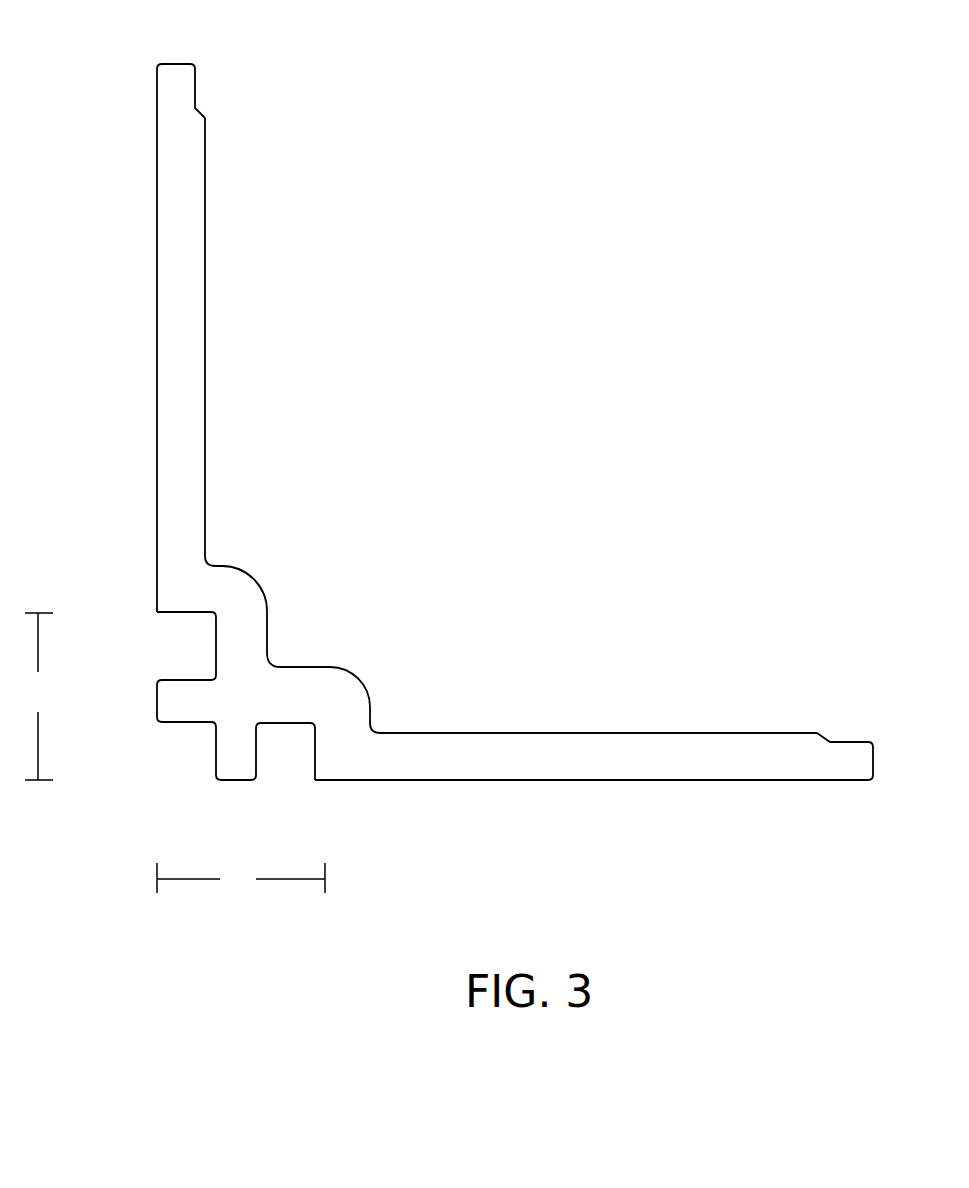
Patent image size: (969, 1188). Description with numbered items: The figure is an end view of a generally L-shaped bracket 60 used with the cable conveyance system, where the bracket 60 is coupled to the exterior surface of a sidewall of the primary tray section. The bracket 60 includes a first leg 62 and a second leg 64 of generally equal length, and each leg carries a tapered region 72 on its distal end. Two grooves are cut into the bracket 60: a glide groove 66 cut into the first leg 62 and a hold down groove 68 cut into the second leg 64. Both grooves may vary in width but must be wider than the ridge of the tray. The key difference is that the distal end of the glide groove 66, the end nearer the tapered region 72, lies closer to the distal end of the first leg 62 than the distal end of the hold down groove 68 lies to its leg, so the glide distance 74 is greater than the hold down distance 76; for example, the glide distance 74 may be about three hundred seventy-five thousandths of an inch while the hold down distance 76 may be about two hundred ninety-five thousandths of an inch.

The bracket 60 is at (574, 416).
The first leg 62 is at (171, 255).
The second leg 64 is at (665, 770).
The glide groove 66 is at (187, 637).
The hold down groove 68 is at (279, 762).
The tapered region 72 is at (197, 82).
The glide distance 74 is at (37, 696).
The hold down distance 76 is at (241, 878).